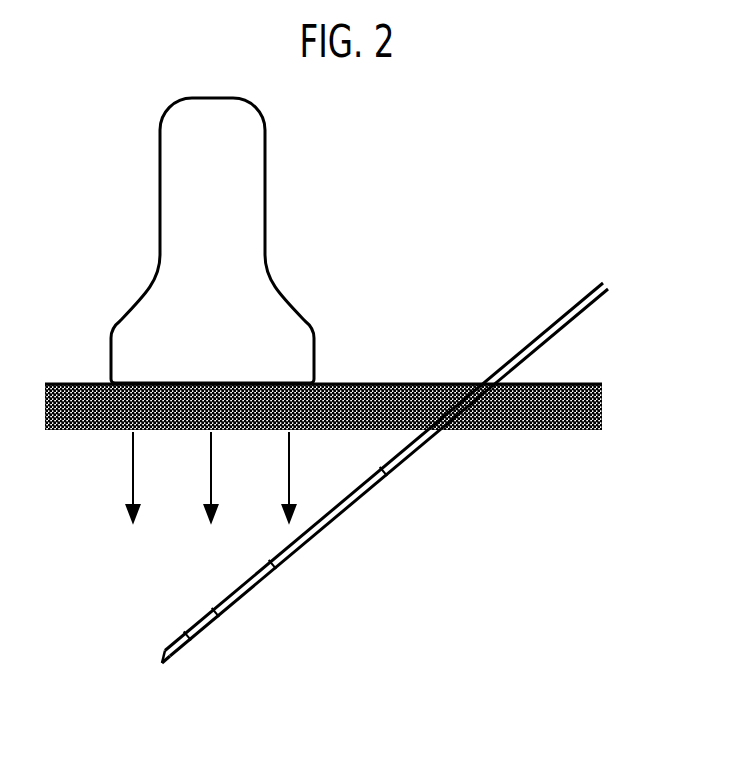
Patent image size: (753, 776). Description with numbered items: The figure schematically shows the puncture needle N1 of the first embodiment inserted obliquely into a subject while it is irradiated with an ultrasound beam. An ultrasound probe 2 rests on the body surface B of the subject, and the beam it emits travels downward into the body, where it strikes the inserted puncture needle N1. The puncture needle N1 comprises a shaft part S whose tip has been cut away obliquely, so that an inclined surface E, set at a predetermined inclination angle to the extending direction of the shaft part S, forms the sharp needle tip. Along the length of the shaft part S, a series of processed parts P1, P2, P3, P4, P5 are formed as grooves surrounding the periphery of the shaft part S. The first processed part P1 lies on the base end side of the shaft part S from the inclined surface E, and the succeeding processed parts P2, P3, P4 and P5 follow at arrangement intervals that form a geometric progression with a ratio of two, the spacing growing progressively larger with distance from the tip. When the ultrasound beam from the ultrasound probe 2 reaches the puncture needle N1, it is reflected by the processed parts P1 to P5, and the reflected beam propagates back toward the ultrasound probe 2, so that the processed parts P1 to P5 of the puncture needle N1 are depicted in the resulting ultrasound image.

The ultrasound probe 2 is at (187, 178).
The body surface B is at (360, 383).
The puncture needle N1 is at (348, 475).
The shaft part S is at (379, 475).
The inclined surface E is at (160, 657).
The first processed part P1 is at (176, 661).
The second processed part P2 is at (188, 641).
The third processed part P3 is at (217, 616).
The fourth processed part P4 is at (274, 569).
The fifth processed part P5 is at (384, 477).